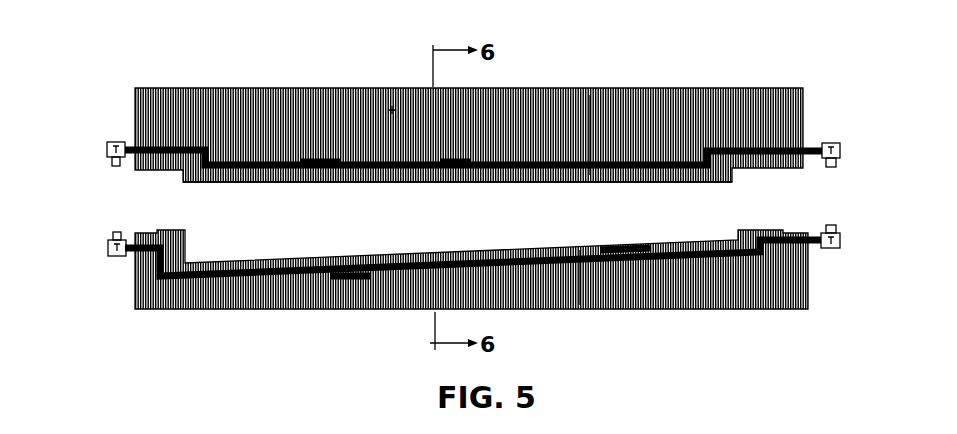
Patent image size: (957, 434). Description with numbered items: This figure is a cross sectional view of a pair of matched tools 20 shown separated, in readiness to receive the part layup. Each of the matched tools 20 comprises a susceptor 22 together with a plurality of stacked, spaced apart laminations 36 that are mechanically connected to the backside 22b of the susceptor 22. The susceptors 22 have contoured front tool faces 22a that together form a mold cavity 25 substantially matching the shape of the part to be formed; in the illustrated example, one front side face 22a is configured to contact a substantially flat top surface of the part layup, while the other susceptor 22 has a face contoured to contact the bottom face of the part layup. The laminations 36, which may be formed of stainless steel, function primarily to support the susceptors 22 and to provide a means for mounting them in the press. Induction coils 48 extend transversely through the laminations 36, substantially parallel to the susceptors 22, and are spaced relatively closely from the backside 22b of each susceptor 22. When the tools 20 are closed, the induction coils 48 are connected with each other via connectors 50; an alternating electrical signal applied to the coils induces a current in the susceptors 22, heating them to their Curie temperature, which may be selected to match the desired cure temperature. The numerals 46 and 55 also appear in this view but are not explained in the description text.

The matched tool 20 is at (494, 192).
The susceptor 22 is at (269, 249).
The front tool face 22a is at (452, 188).
The backside 22b is at (318, 162).
The mold cavity 25 is at (722, 211).
The lamination 36 is at (374, 108).
The lower edge of fin pack 46 is at (377, 185).
The induction coil 48 is at (600, 143).
The connector 50 is at (108, 248).
The angle of inclination 55 is at (455, 240).